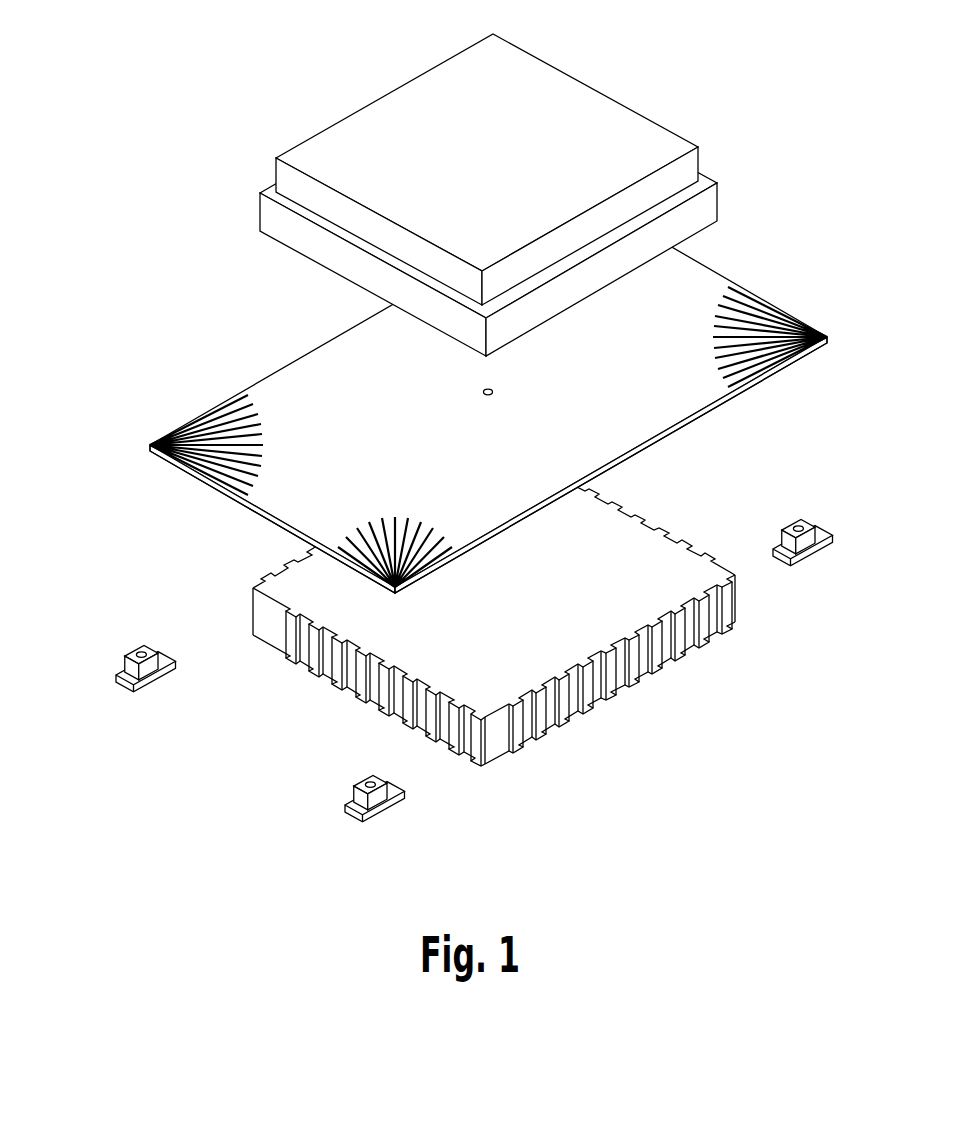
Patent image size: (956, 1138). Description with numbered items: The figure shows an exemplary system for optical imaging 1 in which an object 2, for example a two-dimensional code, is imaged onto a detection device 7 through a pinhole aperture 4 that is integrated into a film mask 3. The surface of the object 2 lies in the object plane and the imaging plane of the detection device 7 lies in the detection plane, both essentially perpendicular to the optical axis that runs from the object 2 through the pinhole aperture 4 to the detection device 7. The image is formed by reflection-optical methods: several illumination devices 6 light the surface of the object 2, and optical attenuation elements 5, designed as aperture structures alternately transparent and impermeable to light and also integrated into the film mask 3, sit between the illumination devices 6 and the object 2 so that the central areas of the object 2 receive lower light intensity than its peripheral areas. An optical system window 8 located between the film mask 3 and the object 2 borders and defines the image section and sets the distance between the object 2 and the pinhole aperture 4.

The system for optical imaging 1 is at (176, 146).
The object 2 is at (573, 113).
The film mask 3 is at (488, 394).
The pinhole aperture 4 is at (484, 390).
The optical attenuation elements 5 is at (217, 430).
The illumination devices 6 is at (800, 530).
The detection device 7 is at (618, 678).
The optical system window 8 is at (695, 212).